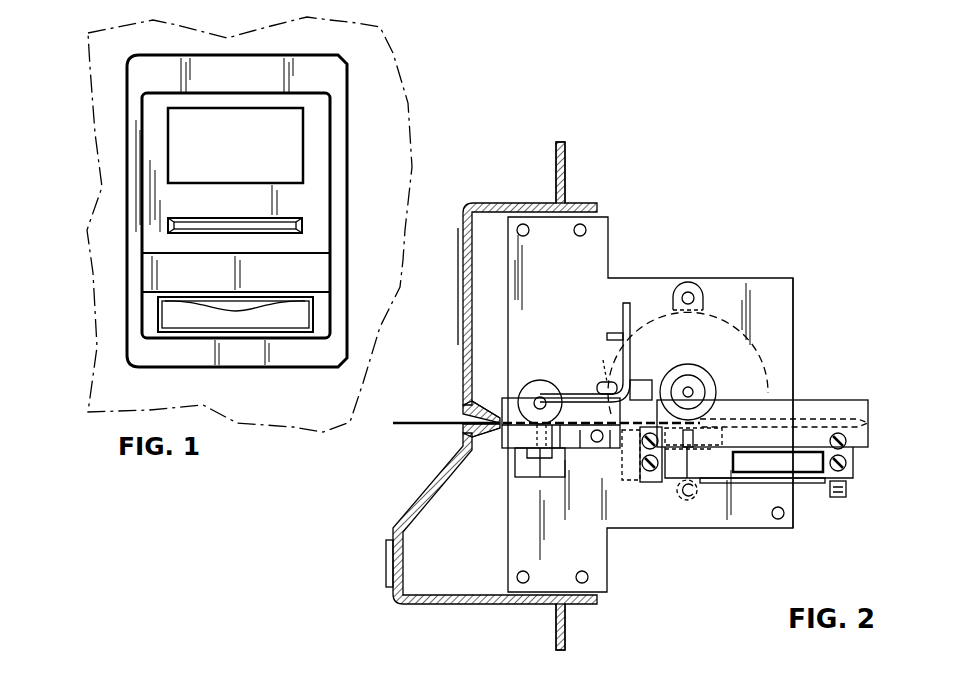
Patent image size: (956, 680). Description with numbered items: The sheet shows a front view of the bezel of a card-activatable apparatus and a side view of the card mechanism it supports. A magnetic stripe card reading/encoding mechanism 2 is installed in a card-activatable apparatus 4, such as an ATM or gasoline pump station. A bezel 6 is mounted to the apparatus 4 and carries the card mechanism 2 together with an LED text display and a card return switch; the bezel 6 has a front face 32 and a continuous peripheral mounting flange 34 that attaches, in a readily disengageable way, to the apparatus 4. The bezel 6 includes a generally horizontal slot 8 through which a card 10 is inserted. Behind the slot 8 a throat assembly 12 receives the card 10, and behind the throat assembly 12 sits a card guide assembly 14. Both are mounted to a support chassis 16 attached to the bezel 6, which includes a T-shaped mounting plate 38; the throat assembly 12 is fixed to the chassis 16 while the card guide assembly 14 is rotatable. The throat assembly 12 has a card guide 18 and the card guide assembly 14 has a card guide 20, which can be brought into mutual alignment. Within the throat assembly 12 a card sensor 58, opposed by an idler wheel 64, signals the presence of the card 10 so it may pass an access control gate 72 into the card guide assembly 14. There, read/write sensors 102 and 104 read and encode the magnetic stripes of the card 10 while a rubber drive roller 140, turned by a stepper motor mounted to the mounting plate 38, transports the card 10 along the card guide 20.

In FIG. 2, the magnetic stripe card reading/encoding mechanism 2 is at (672, 258).
In FIG. 1, the card-activatable apparatus 4 is at (392, 40).
In FIG. 1, the bezel 6 is at (363, 112).
In FIG. 2, the bezel 6 is at (532, 190).
In FIG. 1, the slot 8 is at (302, 226).
In FIG. 2, the slot 8 is at (472, 428).
In FIG. 2, the card 10 is at (400, 423).
In FIG. 2, the throat assembly 12 is at (572, 370).
In FIG. 2, the card guide assembly 14 is at (808, 385).
In FIG. 2, the support chassis 16 is at (630, 555).
In FIG. 2, the card guide 18 is at (573, 453).
In FIG. 2, the card guide 20 is at (867, 426).
In FIG. 2, the front face 32 is at (447, 373).
In FIG. 2, the mounting flange 34 is at (565, 160).
In FIG. 2, the mounting plate 38 is at (793, 297).
In FIG. 2, the card sensor 58 is at (530, 480).
In FIG. 2, the idler wheel 64 is at (540, 380).
In FIG. 2, the access control gate 72 is at (600, 355).
In FIG. 2, the read/write sensor 102 is at (724, 499).
In FIG. 2, the read/write sensor 104 is at (693, 437).
In FIG. 2, the drive roller 140 is at (688, 385).